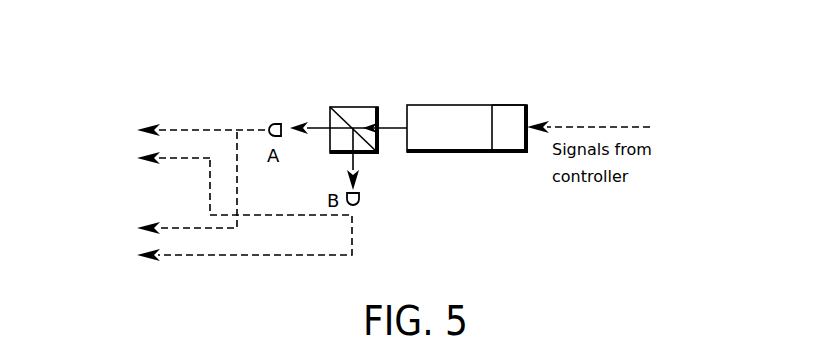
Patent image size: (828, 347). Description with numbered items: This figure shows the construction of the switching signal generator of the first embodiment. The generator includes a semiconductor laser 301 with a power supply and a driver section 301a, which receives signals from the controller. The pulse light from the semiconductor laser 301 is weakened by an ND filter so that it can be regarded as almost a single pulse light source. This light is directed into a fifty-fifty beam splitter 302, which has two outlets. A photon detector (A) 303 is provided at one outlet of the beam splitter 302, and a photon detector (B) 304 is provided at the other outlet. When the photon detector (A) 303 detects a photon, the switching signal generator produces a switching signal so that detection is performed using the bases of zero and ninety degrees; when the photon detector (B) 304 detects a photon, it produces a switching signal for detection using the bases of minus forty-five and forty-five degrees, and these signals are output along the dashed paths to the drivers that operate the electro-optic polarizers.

The semiconductor laser 301 is at (452, 105).
The driver section 301a is at (510, 105).
The 50%-50% beam splitter 302 is at (347, 107).
The photon detector (A) 303 is at (272, 123).
The photon detector (B) 304 is at (360, 198).